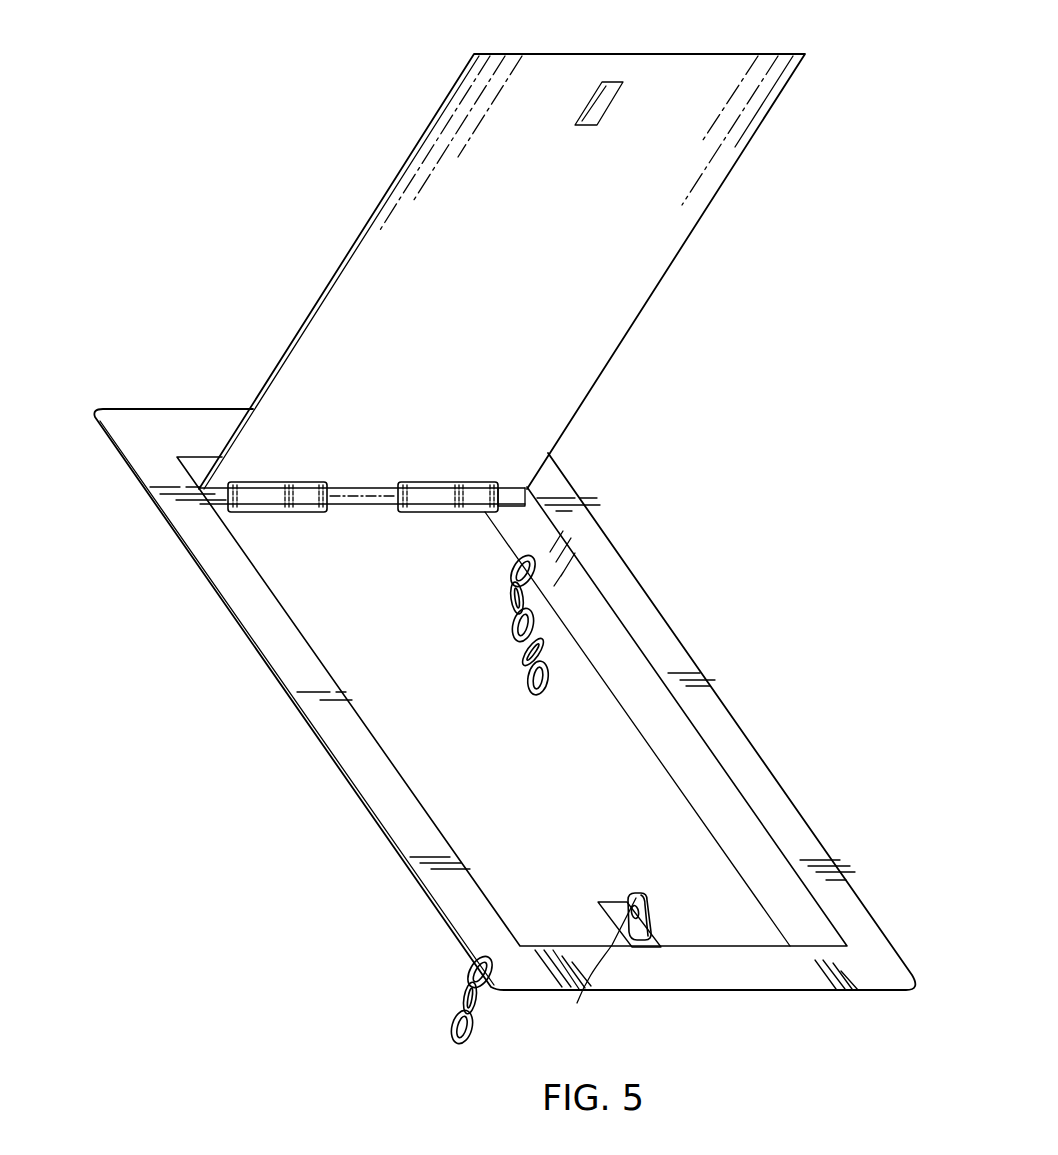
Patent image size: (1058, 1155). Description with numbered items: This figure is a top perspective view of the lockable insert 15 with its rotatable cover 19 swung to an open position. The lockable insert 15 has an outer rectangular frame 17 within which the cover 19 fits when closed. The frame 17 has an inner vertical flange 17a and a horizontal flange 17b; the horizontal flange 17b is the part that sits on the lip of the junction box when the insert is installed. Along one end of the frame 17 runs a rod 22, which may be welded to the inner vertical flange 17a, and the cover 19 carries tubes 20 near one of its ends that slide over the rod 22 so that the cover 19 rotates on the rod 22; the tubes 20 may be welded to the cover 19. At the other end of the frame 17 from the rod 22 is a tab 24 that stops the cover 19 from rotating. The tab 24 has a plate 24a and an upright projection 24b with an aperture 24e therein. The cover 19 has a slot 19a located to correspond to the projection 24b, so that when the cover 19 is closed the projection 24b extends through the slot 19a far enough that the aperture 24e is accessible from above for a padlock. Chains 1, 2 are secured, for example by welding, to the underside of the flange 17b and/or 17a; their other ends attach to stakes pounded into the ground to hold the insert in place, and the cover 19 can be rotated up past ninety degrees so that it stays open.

The chain 1 is at (518, 668).
The chain 2 is at (455, 1013).
The lockable insert 15 is at (504, 699).
The outer rectangular frame 17 is at (504, 723).
The inner vertical flange 17a is at (670, 720).
The horizontal flange 17b is at (765, 775).
The rotatable cover 19 is at (502, 271).
The slot 19a is at (587, 126).
The tubes 20 is at (290, 513).
The rod 22 is at (363, 506).
The tab 24 is at (636, 947).
The plate 24a is at (658, 940).
The upright projection 24b is at (647, 895).
The aperture 24e is at (593, 917).